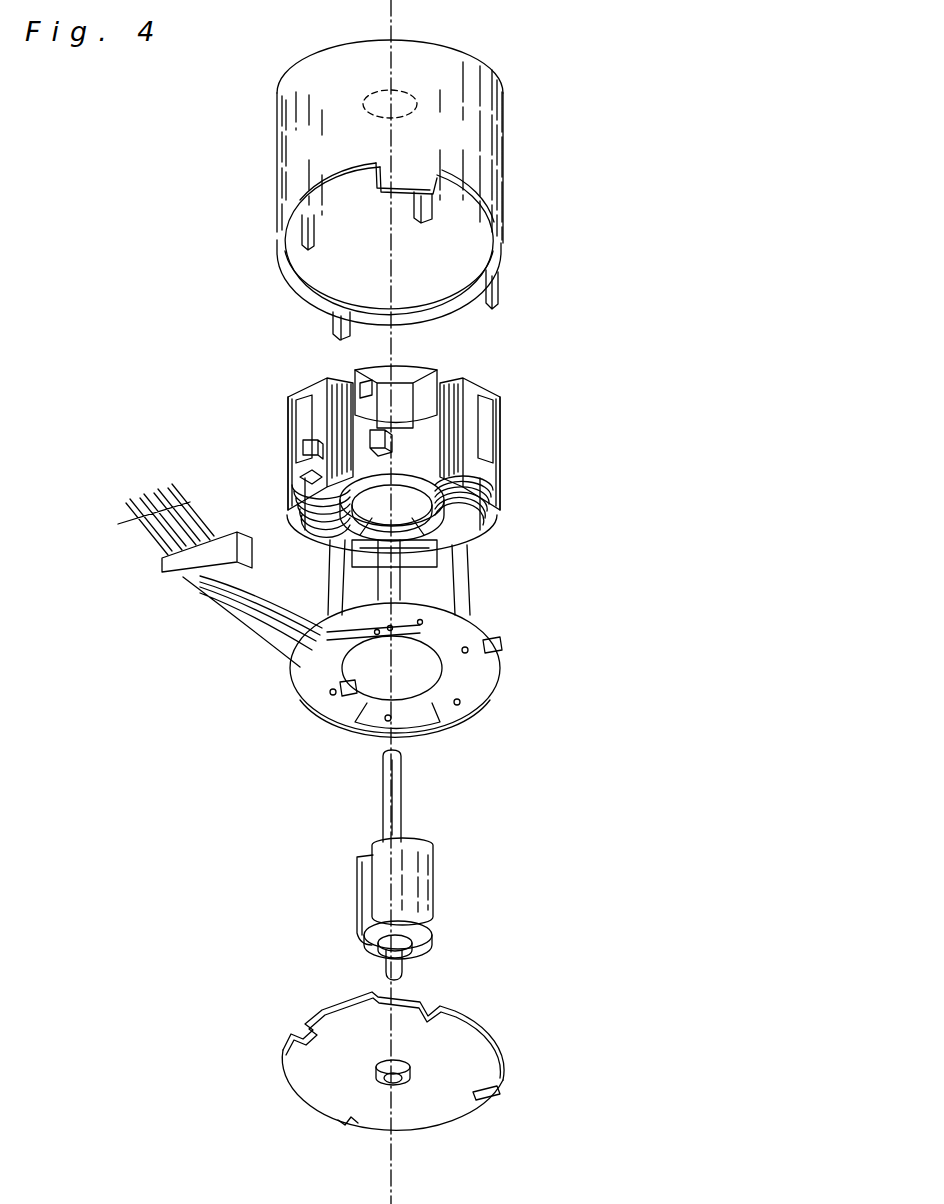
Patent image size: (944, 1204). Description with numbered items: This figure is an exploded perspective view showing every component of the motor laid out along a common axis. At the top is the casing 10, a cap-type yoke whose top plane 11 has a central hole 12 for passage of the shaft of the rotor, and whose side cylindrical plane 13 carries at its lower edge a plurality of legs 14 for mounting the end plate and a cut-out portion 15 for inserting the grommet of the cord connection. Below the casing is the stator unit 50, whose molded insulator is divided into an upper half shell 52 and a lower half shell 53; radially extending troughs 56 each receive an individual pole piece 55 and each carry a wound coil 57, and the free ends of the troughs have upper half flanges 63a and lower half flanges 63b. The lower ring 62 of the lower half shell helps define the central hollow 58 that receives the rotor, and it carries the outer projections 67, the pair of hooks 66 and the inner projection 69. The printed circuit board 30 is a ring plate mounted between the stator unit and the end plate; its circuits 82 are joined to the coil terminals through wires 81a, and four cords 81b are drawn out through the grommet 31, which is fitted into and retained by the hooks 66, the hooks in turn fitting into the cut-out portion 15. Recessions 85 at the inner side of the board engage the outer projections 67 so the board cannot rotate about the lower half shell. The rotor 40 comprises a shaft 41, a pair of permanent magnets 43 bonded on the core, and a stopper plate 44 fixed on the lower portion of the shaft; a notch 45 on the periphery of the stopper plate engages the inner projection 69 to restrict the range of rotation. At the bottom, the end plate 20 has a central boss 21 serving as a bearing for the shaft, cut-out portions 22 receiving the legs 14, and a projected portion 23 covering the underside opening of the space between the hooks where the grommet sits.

The casing 10 is at (401, 170).
The top plane 11 is at (463, 85).
The hole 12 is at (398, 100).
The side cylindrical plane 13 is at (300, 100).
The legs 14 is at (498, 282).
The cut-out portion 15 is at (333, 185).
The end plate 20 is at (419, 1079).
The boss 21 is at (405, 1080).
The cut-out portions 22 is at (345, 1128).
The projected portion 23 is at (342, 1008).
The printed circuit board 30 is at (358, 631).
The grommet 31 is at (178, 578).
The rotor 40 is at (433, 865).
The shaft 41 is at (405, 808).
The permanent magnets 43 is at (422, 869).
The stopper plate 44 is at (428, 940).
The notch 45 is at (365, 946).
The stator unit 50 is at (429, 479).
The upper half shell 52 is at (395, 378).
The lower half shell 53 is at (481, 392).
The pole pieces 55 is at (428, 395).
The troughs 56 is at (372, 388).
The coils 57 is at (330, 383).
The hollow 58 is at (478, 548).
The lower ring 62 is at (300, 477).
The upper half flanges 63a is at (493, 398).
The lower half flanges 63b is at (480, 467).
The hooks 66 is at (370, 435).
The outer projections 67 is at (478, 520).
The inner projection 69 is at (383, 525).
The wires 81a is at (490, 597).
The cords 81b is at (235, 628).
The circuits 82 is at (433, 712).
The recessions 85 is at (350, 693).